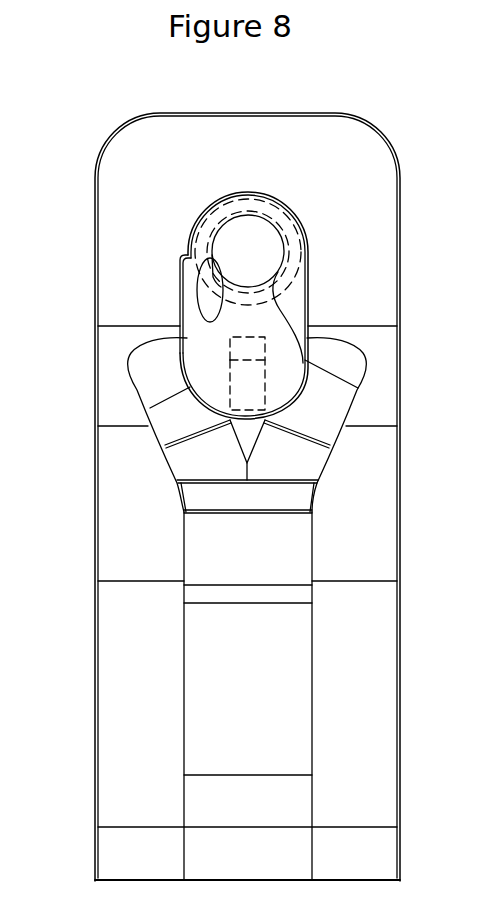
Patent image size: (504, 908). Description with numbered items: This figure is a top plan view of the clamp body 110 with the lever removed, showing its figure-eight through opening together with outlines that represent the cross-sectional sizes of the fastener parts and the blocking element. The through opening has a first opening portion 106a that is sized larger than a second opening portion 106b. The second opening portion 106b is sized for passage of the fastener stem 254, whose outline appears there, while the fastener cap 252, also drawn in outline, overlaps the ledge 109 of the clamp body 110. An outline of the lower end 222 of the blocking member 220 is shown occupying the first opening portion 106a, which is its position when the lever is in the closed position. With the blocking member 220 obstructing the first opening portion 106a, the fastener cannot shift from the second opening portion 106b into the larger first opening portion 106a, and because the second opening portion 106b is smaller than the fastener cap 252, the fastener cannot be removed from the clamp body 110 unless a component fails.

The clamp body 110 is at (113, 137).
The first opening portion 106a is at (210, 357).
The second opening portion 106b is at (243, 240).
The ledge 109 is at (288, 232).
The fastener cap 252 is at (233, 298).
The fastener stem 254 is at (222, 294).
The blocking member 220 is at (265, 393).
The lower end 222 is at (265, 380).